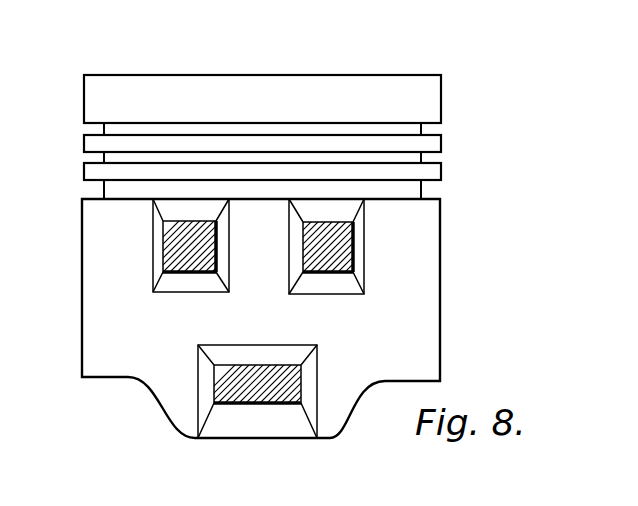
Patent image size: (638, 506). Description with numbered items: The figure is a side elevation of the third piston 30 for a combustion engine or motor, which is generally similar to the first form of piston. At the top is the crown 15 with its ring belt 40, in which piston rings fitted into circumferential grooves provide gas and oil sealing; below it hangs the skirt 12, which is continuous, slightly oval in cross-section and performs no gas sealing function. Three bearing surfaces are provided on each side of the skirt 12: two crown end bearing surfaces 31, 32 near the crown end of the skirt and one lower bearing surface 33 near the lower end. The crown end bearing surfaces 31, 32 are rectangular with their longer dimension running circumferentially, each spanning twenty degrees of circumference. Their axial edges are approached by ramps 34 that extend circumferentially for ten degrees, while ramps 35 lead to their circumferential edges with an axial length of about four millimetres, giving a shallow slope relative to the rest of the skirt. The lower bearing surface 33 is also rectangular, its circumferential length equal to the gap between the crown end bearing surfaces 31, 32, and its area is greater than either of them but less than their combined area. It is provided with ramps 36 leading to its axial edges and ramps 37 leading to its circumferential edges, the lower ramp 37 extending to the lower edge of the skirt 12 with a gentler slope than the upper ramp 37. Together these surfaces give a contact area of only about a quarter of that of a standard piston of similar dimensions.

The skirt 12 is at (430, 336).
The crown 15 is at (166, 75).
The third piston 30 is at (411, 66).
The crown end bearing surface 31 is at (178, 243).
The crown end bearing surface 32 is at (345, 246).
The lower bearing surface 33 is at (272, 388).
The ramps 34 is at (157, 265).
The ramps 35 is at (168, 208).
The ramps 36 is at (200, 400).
The ramps 37 is at (247, 353).
The ring belt 40 is at (320, 105).